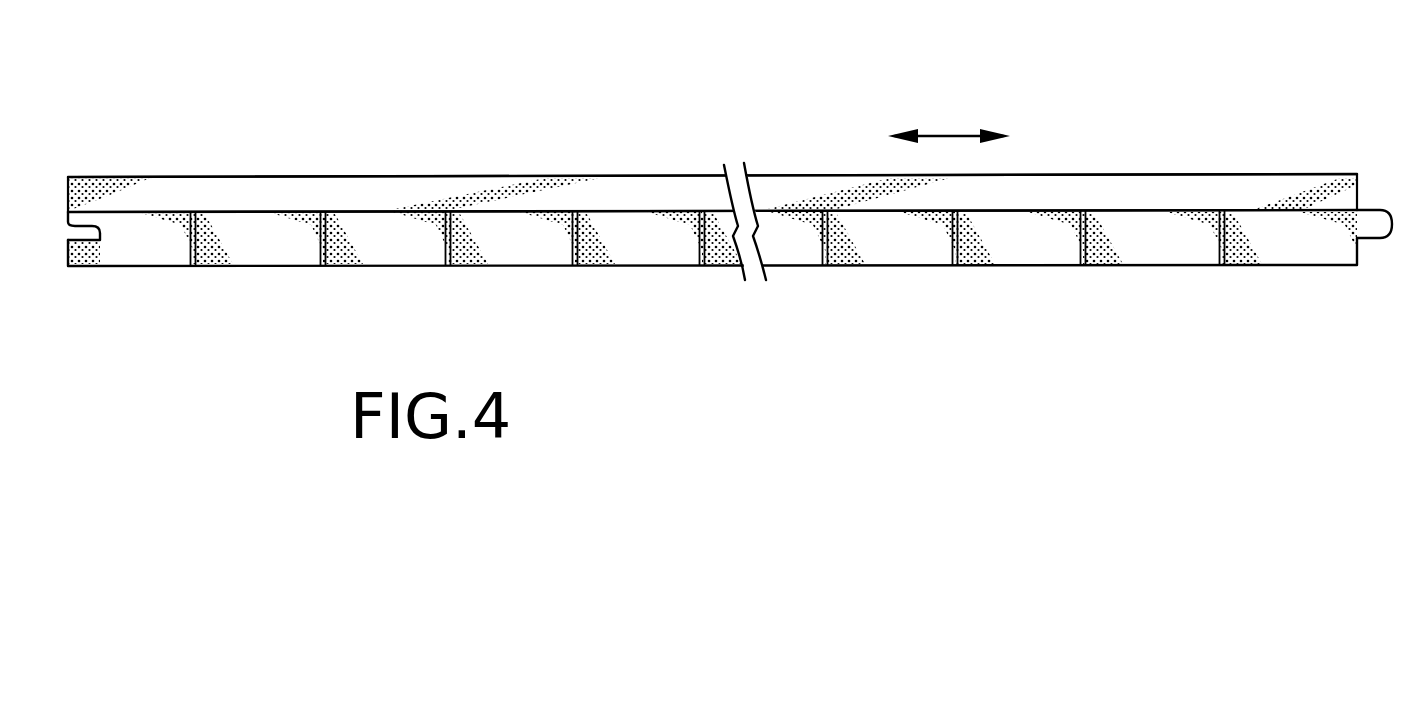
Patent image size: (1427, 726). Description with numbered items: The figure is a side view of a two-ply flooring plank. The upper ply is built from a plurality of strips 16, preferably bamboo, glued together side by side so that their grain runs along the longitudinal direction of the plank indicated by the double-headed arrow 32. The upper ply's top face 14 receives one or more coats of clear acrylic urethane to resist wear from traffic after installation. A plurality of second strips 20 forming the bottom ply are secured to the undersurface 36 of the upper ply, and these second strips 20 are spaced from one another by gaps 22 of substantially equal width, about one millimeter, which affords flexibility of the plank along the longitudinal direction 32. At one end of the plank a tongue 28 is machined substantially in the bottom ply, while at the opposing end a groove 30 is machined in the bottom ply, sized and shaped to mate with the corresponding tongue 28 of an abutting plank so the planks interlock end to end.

The top face 14 is at (432, 176).
The strips 16 is at (363, 195).
The second strips 20 is at (248, 248).
The gaps 22 is at (323, 270).
The tongue 28 is at (1392, 222).
The groove 30 is at (78, 224).
The longitudinal direction 32 is at (945, 135).
The undersurface 36 is at (622, 215).